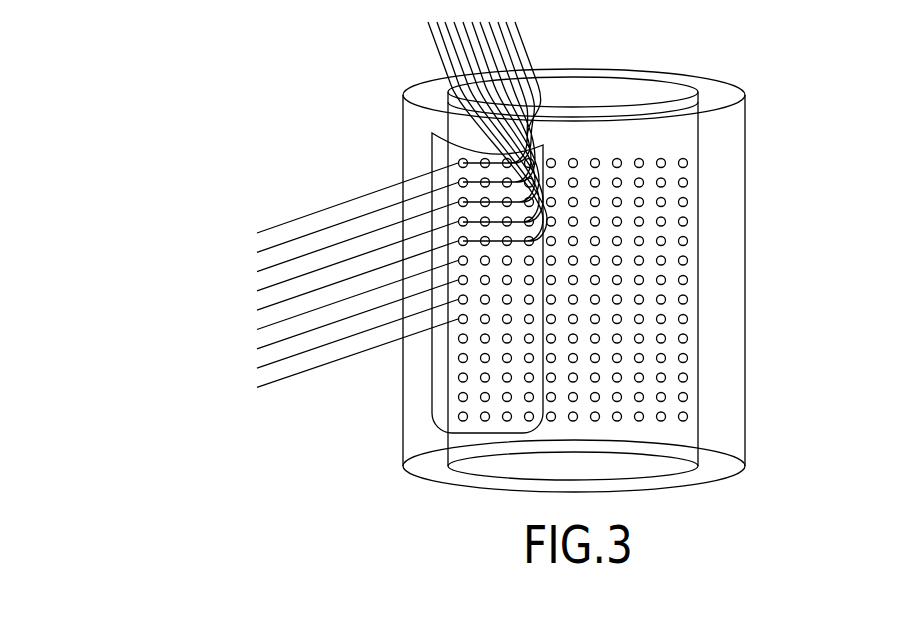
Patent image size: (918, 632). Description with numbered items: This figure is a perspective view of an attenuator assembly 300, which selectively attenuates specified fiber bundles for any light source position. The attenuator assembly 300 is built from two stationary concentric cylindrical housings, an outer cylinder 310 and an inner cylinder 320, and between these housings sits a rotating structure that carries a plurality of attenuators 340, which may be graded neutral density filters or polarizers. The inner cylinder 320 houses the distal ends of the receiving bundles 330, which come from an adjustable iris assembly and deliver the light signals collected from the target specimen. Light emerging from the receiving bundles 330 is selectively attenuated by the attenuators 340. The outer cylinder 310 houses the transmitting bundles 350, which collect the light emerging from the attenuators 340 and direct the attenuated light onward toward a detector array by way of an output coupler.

The attenuator assembly 300 is at (526, 262).
The outer cylinder 310 is at (747, 262).
The inner cylinder 320 is at (598, 78).
The receiving bundles 330 is at (428, 30).
The attenuators 340 is at (432, 155).
The transmitting bundles 350 is at (300, 372).